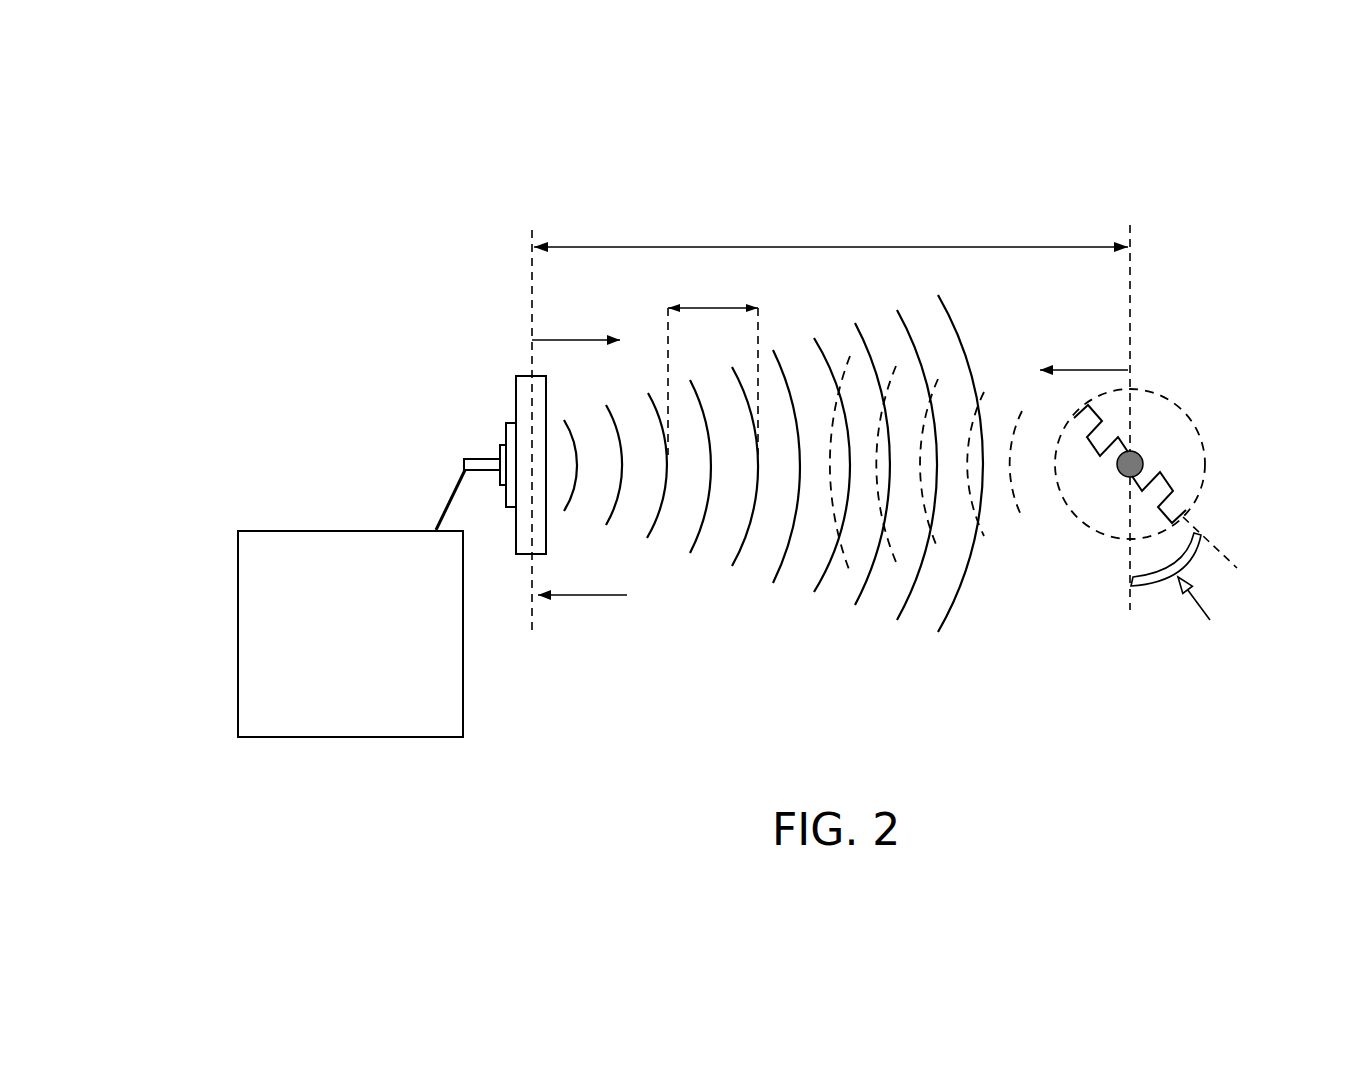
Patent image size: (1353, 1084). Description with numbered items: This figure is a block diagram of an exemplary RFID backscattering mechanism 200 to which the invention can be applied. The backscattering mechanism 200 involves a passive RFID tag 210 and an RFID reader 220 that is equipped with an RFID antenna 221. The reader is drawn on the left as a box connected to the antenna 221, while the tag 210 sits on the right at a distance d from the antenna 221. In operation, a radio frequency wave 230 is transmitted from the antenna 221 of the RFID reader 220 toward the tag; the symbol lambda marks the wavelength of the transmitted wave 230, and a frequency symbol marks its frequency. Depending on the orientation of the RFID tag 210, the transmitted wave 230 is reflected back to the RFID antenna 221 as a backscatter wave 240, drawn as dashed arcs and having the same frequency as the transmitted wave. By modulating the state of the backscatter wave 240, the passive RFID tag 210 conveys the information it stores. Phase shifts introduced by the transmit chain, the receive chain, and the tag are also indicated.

The RFID backscattering mechanism 200 is at (198, 95).
The passive RFID tag 210 is at (1154, 444).
The RFID reader 220 is at (351, 603).
The RFID antenna 221 is at (468, 446).
The transmitted wave 230 is at (764, 588).
The backscatter wave 240 is at (1073, 540).